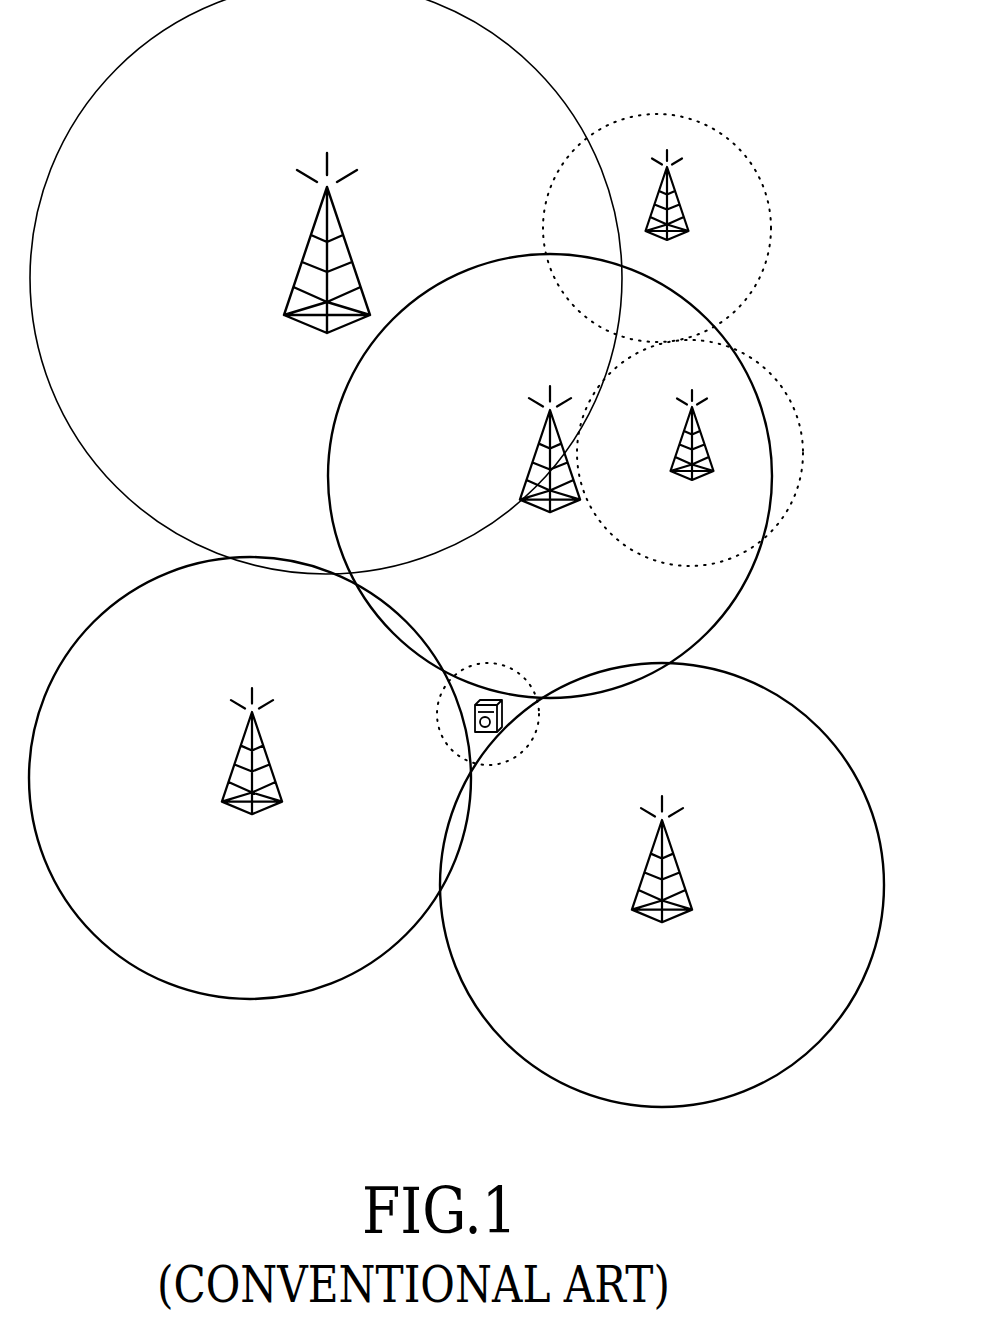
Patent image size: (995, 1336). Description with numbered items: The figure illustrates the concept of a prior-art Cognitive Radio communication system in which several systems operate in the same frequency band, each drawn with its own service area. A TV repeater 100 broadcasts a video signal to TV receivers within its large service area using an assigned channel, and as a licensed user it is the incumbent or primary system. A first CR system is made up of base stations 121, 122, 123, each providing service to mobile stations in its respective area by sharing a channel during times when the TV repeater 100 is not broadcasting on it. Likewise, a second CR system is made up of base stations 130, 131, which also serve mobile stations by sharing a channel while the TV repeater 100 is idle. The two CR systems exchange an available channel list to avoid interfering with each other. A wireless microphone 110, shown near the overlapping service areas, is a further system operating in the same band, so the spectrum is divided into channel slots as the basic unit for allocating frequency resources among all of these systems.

The TV repeater 100 is at (326, 287).
The wireless microphone 110 is at (517, 714).
The base station 121 is at (550, 476).
The base station 122 is at (250, 778).
The base station 123 is at (662, 885).
The base station 130 is at (657, 228).
The base station 131 is at (690, 453).